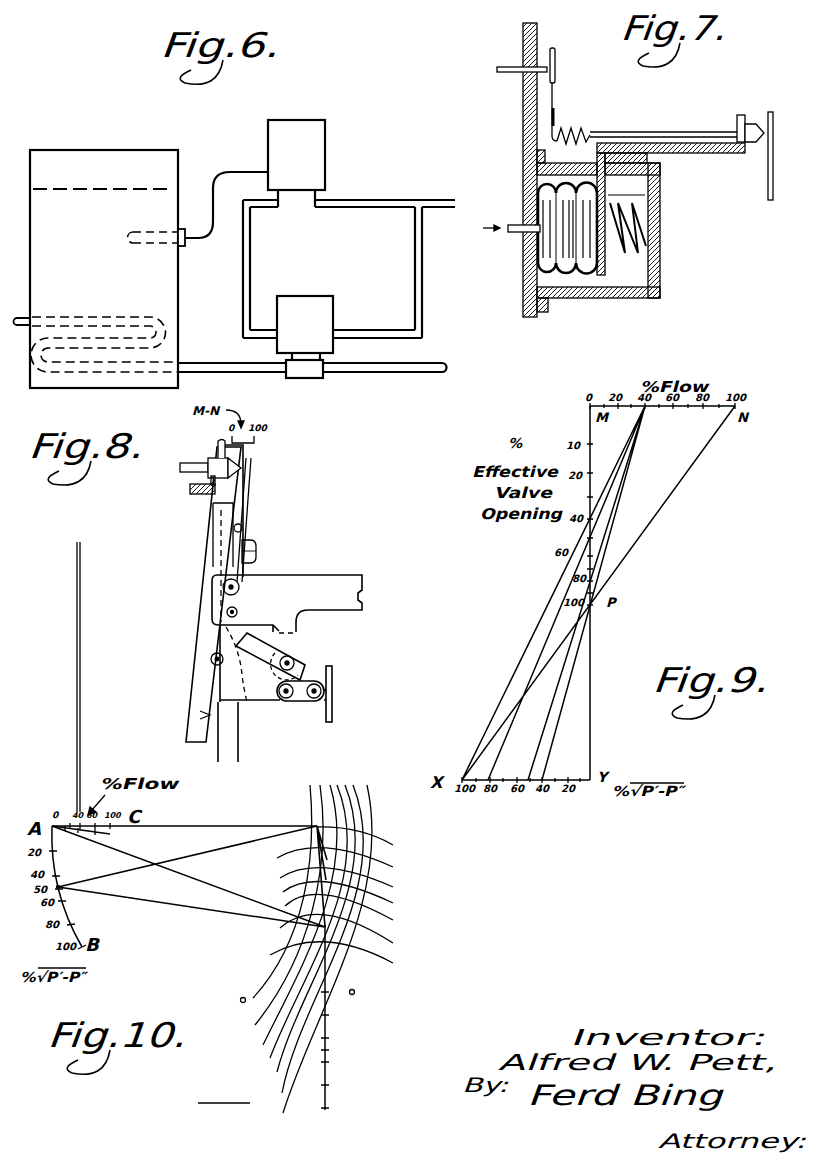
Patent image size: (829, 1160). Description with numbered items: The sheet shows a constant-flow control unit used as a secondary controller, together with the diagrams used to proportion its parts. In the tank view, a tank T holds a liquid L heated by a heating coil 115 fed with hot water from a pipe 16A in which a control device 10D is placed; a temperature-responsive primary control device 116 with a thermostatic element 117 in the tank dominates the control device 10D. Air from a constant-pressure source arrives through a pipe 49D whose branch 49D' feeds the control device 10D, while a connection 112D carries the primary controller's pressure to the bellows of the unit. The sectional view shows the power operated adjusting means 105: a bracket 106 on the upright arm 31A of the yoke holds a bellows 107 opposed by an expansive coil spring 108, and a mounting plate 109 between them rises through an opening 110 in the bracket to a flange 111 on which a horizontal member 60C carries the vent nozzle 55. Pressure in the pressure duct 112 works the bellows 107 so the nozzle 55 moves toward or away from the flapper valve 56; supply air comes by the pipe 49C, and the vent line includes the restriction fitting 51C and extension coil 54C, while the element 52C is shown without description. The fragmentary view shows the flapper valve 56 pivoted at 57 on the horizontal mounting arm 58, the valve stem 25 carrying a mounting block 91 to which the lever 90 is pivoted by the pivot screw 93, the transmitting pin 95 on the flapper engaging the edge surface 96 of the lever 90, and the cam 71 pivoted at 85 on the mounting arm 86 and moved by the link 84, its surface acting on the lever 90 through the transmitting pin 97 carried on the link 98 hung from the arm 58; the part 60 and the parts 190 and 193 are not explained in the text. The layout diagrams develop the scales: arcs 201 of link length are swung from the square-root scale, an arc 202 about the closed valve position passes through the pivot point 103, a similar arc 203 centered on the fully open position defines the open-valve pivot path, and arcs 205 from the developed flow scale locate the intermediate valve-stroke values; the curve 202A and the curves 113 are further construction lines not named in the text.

In FIG. 6, the tank T is at (70, 157).
In FIG. 6, the liquid L is at (115, 188).
In FIG. 6, the heating coil 115 is at (170, 329).
In FIG. 10, the heating coil 115 is at (190, 878).
In FIG. 6, the thermostatic element 117 is at (157, 242).
In FIG. 6, the primary control device 116 is at (311, 150).
In FIG. 10, the primary control device 116 is at (87, 839).
In FIG. 6, the pipe 49D is at (356, 189).
In FIG. 6, the branch 49D' is at (449, 272).
In FIG. 6, the connection 112D is at (251, 263).
In FIG. 6, the control device 10D is at (355, 285).
In FIG. 6, the pipe 16A is at (437, 372).
In FIG. 7, the upright arm 31A is at (526, 311).
In FIG. 7, the pipe 49C is at (504, 74).
In FIG. 7, the link 52C is at (555, 58).
In FIG. 7, the restriction fitting 51C is at (558, 98).
In FIG. 7, the extension coil 54C is at (572, 126).
In FIG. 7, the member 60C is at (719, 143).
In FIG. 7, the vent nozzle 55 is at (755, 123).
In FIG. 8, the vent nozzle 55 is at (220, 443).
In FIG. 7, the flapper valve 56 is at (768, 190).
In FIG. 8, the flapper valve 56 is at (251, 495).
In FIG. 7, the flange 111 is at (648, 152).
In FIG. 10, the flange 111 is at (283, 944).
In FIG. 7, the opening 110 is at (620, 179).
In FIG. 10, the opening 110 is at (61, 886).
In FIG. 7, the bracket 106 is at (627, 298).
In FIG. 10, the bracket 106 is at (221, 851).
In FIG. 7, the power operated adjusting means 105 is at (668, 250).
In FIG. 7, the pressure duct 112 is at (522, 222).
In FIG. 10, the pressure duct 112 is at (333, 968).
In FIG. 7, the bellows 107 is at (568, 272).
In FIG. 7, the expansive coil spring 108 is at (642, 217).
In FIG. 7, the mounting plate 109 is at (640, 194).
In FIG. 10, the mounting plate 109 is at (193, 908).
In FIG. 8, the pointer rod 190 is at (78, 713).
In FIG. 8, the pointer 193 is at (79, 617).
In FIG. 8, the valve stem 25 is at (239, 743).
In FIG. 8, the lever 90 is at (197, 673).
In FIG. 8, the bracket 60 is at (206, 492).
In FIG. 8, the link 98 is at (228, 633).
In FIG. 8, the transmitting pin 95 is at (245, 524).
In FIG. 8, the mounting block 91 is at (257, 543).
In FIG. 8, the pivot screw 93 is at (258, 552).
In FIG. 8, the horizontal mounting arm 58 is at (345, 582).
In FIG. 8, the pivot 57 is at (240, 588).
In FIG. 8, the mounting arm 86 is at (293, 622).
In FIG. 8, the pivot 85 is at (298, 659).
In FIG. 8, the transmitting pin 97 is at (211, 657).
In FIG. 8, the edge surface 96 is at (203, 715).
In FIG. 8, the cam 71 is at (269, 701).
In FIG. 8, the link 84 is at (333, 702).
In FIG. 10, the pivot point 103 is at (316, 826).
In FIG. 10, the arcs 201 is at (272, 988).
In FIG. 10, the arc 202 is at (380, 841).
In FIG. 10, the curve 202A is at (378, 877).
In FIG. 10, the arc 203 is at (393, 963).
In FIG. 10, the arcs 205 is at (360, 804).
In FIG. 10, the curve family 113 is at (318, 1090).